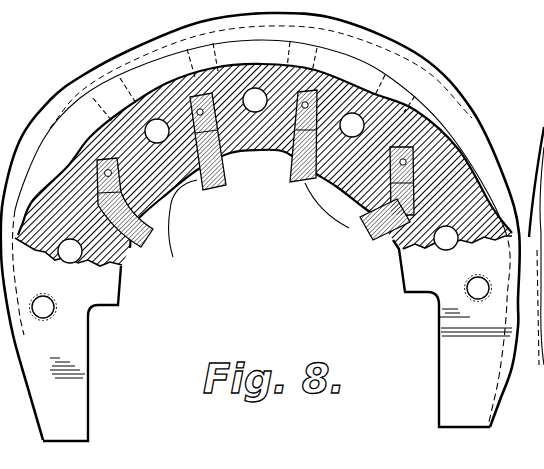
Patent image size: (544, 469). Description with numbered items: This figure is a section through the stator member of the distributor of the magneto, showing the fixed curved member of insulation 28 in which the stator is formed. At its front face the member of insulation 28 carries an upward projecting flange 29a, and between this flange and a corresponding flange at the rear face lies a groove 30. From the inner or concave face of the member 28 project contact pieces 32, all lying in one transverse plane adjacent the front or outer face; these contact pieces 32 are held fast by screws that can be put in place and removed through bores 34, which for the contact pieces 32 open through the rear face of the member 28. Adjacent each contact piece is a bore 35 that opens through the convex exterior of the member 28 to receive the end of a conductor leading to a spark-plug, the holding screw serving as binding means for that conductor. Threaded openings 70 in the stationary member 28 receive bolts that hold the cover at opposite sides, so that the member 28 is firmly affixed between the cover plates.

The fixed curved member of insulation 28 is at (180, 197).
The upward projecting flange 29a is at (352, 42).
The groove 30 is at (168, 73).
The contact pieces 32 is at (153, 243).
The bores 34 is at (150, 127).
The bore 35 is at (412, 103).
The threaded openings 70 is at (58, 311).